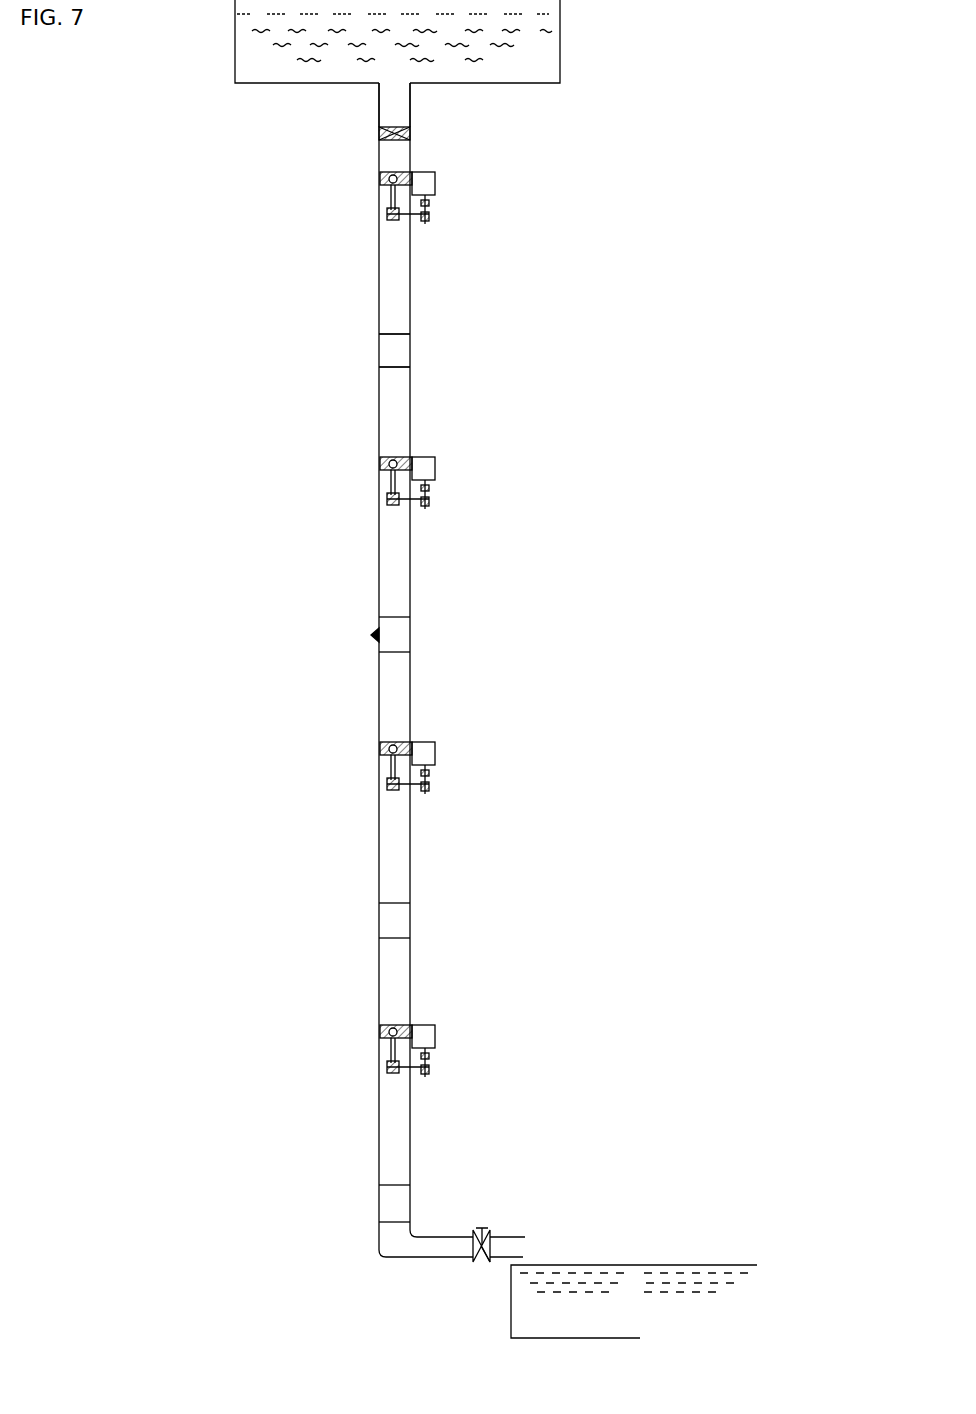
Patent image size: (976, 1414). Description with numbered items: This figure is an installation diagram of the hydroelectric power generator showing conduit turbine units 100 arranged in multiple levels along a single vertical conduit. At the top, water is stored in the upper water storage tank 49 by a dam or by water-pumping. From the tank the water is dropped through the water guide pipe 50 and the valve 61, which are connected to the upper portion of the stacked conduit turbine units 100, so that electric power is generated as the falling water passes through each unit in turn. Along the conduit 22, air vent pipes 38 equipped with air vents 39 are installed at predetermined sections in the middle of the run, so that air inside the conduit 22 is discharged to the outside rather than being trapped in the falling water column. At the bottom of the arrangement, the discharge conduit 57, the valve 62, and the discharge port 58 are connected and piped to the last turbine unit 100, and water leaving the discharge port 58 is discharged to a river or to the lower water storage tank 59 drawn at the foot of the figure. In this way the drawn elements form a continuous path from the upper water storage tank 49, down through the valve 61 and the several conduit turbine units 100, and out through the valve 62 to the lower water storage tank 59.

The upper water storage tank 49 is at (560, 68).
The water guide pipe 50 is at (410, 107).
The valve 61 is at (379, 140).
The conduit 22 is at (380, 252).
The air vent pipe 38 is at (404, 345).
The air vent 39 is at (379, 338).
The conduit turbine unit 100 is at (455, 183).
The discharge conduit 57 is at (437, 1248).
The valve 62 is at (487, 1240).
The discharge port 58 is at (520, 1247).
The lower water storage tank 59 is at (511, 1322).